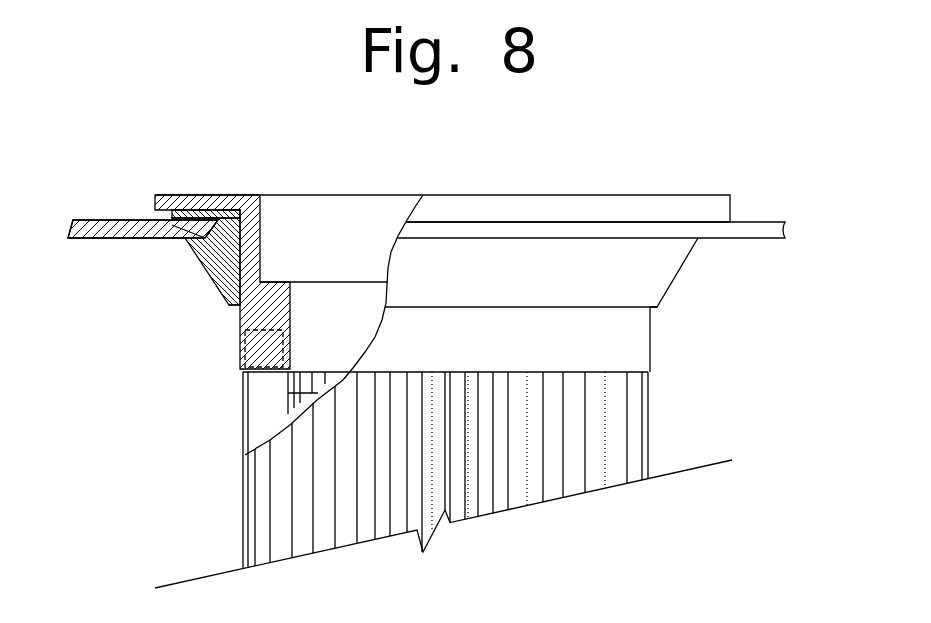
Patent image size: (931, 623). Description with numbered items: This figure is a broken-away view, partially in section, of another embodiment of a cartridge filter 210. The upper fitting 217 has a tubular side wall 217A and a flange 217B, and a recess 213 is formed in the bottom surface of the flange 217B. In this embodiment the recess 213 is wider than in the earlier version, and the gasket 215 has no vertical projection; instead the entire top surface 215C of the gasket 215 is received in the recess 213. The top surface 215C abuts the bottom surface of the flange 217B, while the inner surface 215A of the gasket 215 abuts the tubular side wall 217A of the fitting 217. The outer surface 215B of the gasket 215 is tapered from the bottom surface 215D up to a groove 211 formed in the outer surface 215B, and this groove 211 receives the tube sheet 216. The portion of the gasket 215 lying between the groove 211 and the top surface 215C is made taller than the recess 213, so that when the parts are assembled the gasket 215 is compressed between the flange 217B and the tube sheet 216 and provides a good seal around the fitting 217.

The cartridge filter 210 is at (660, 155).
The groove 211 is at (192, 238).
The recess 213 is at (262, 257).
The gasket 215 is at (677, 276).
The inner surface 215A is at (262, 222).
The outer surface 215B is at (212, 273).
The top surface 215C is at (204, 212).
The bottom surface 215D is at (238, 303).
The tube sheet 216 is at (108, 220).
The upper fitting 217 is at (467, 194).
The tubular side wall 217A is at (652, 343).
The flange 217B is at (731, 211).